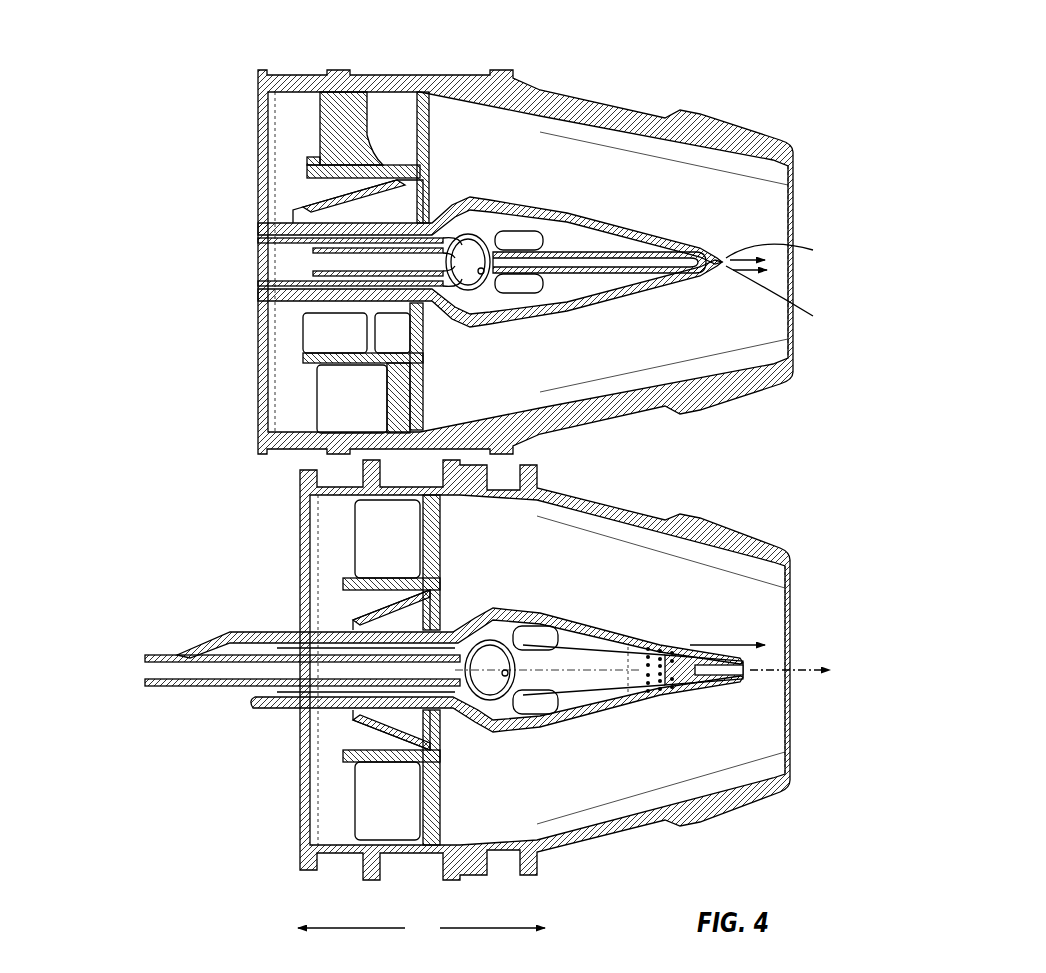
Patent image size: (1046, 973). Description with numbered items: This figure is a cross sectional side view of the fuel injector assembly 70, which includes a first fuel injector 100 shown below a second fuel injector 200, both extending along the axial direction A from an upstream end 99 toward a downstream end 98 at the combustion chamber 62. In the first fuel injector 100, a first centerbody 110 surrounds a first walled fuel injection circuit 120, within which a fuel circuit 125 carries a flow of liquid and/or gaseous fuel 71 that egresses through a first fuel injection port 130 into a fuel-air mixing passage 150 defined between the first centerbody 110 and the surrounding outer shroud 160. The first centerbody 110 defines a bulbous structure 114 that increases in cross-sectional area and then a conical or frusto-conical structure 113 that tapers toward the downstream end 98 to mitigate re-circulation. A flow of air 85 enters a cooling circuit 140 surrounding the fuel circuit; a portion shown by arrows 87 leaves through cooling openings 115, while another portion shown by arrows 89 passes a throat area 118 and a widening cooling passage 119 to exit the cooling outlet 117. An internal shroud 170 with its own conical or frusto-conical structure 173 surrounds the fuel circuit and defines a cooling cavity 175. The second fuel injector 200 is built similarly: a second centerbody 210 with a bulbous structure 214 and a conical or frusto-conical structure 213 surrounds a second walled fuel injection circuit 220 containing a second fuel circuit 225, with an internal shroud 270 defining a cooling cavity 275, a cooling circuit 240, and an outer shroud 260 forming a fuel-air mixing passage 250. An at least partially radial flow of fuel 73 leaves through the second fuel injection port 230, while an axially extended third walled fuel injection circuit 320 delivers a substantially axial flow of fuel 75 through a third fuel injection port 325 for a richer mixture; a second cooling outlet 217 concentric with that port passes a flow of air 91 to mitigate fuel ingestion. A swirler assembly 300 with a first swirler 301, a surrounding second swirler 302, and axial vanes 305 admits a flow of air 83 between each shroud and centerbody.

The fuel injector assembly 70 is at (707, 28).
The second fuel injector 200 is at (785, 92).
The first fuel injector 100 is at (767, 490).
The at least partially radial flow of fuel 73 is at (497, 195).
The flow of air 83 is at (283, 192).
The flow of air 85 is at (253, 238).
The flow of liquid and/or gaseous fuel 71 is at (253, 265).
The substantially axial flow of fuel 75 is at (770, 267).
The flow of air 91 is at (783, 281).
The combustion chamber 62 is at (923, 294).
The downstream end 98 is at (905, 478).
The upstream end 99 is at (100, 432).
The swirler assembly 300 is at (395, 115).
The first swirler 301 is at (307, 205).
The second swirler 302 is at (330, 130).
The vanes 305 is at (333, 418).
The second centerbody 210 is at (563, 215).
The conical or frusto-conical structure 213 is at (633, 222).
The bulbous structure 214 is at (540, 172).
The second cooling outlet 217 is at (727, 253).
The second walled fuel injection circuit 220 is at (432, 305).
The second fuel circuit 225 is at (360, 270).
The second fuel injection port 230 is at (497, 213).
The cooling circuit 240 is at (575, 293).
The fuel-air mixing passage 250 is at (645, 396).
The outer shroud 260 is at (630, 418).
The internal shroud 270 is at (533, 300).
The cooling cavity 275 is at (540, 295).
The third walled fuel injection circuit 320 is at (623, 277).
The third fuel injection port 325 is at (720, 274).
The outer shroud 160 is at (610, 515).
The internal shroud 170 is at (563, 583).
The conical or frusto-conical structure 173 is at (552, 632).
The first fuel injection port 130 is at (520, 625).
The conical or frusto-conical structure 113 is at (634, 633).
The cooling openings 115 is at (672, 638).
The cooling outlet 117 is at (747, 682).
The throat area 118 is at (672, 683).
The cooling passage 119 is at (693, 680).
The first centerbody 110 is at (537, 690).
The bulbous structure 114 is at (462, 735).
The first walled fuel injection circuit 120 is at (237, 693).
The fuel circuit 125 is at (190, 680).
The cooling circuit 140 is at (617, 699).
The fuel-air mixing passage 150 is at (607, 799).
The cooling cavity 175 is at (540, 712).
The flow of air (arrows) 87 is at (762, 632).
The flow of air (arrows) 89 is at (762, 670).
The axial direction A is at (421, 927).